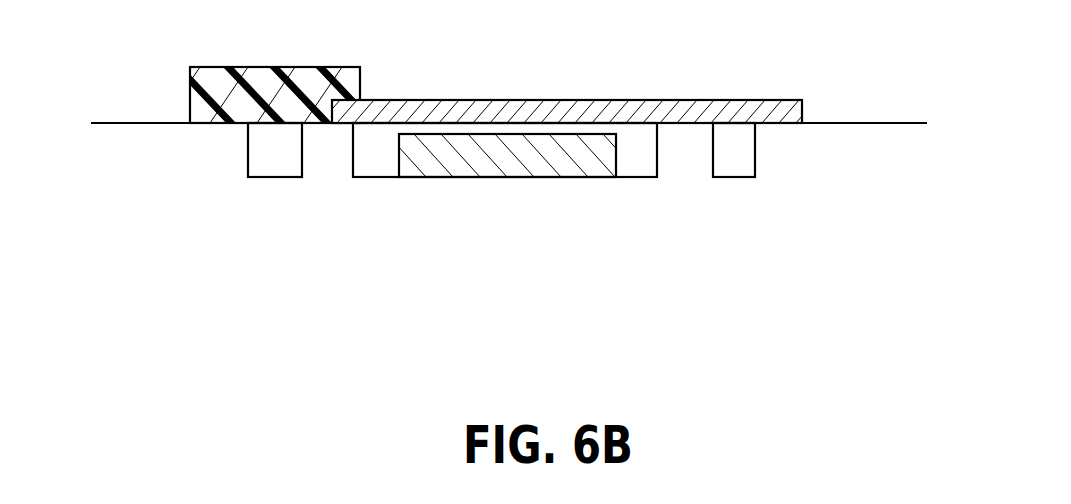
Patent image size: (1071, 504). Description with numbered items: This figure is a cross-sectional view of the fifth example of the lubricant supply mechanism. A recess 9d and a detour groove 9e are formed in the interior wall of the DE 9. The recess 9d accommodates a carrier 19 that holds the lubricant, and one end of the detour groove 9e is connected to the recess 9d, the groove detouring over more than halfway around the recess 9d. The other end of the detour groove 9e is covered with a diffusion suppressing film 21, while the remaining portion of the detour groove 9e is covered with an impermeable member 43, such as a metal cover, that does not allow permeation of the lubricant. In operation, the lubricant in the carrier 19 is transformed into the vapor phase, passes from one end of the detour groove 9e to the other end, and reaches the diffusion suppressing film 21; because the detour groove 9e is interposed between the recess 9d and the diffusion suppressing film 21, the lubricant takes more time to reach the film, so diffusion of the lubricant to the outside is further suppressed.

The DE 9 is at (115, 147).
The recess 9d is at (640, 134).
The detour groove 9e is at (281, 134).
The carrier 19 is at (445, 152).
The diffusion suppressing film 21 is at (209, 88).
The insulating film 43 is at (569, 108).